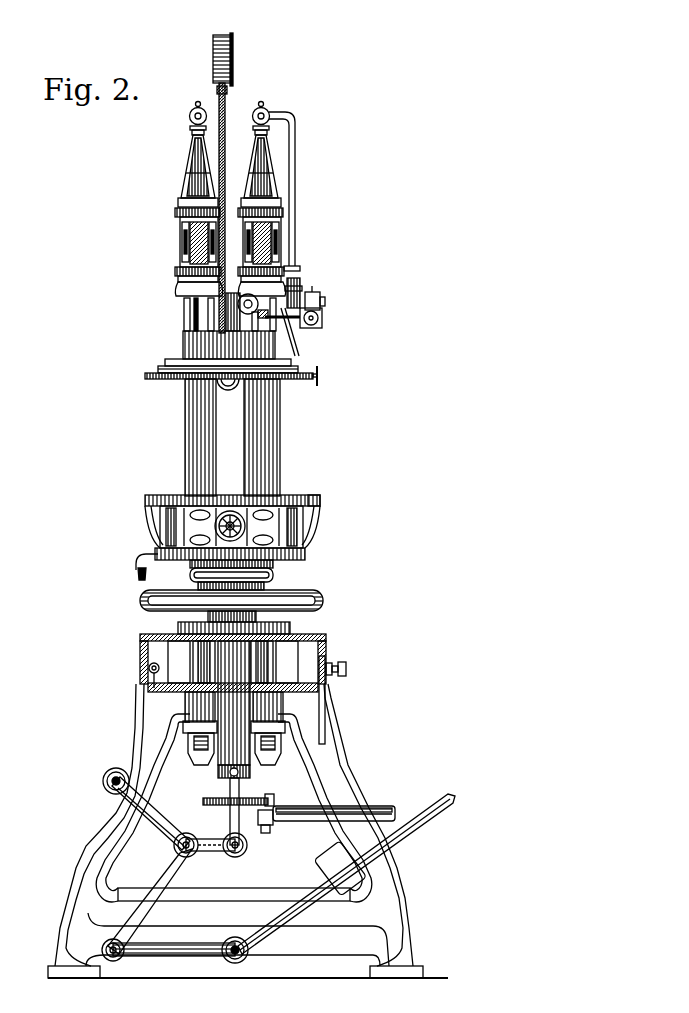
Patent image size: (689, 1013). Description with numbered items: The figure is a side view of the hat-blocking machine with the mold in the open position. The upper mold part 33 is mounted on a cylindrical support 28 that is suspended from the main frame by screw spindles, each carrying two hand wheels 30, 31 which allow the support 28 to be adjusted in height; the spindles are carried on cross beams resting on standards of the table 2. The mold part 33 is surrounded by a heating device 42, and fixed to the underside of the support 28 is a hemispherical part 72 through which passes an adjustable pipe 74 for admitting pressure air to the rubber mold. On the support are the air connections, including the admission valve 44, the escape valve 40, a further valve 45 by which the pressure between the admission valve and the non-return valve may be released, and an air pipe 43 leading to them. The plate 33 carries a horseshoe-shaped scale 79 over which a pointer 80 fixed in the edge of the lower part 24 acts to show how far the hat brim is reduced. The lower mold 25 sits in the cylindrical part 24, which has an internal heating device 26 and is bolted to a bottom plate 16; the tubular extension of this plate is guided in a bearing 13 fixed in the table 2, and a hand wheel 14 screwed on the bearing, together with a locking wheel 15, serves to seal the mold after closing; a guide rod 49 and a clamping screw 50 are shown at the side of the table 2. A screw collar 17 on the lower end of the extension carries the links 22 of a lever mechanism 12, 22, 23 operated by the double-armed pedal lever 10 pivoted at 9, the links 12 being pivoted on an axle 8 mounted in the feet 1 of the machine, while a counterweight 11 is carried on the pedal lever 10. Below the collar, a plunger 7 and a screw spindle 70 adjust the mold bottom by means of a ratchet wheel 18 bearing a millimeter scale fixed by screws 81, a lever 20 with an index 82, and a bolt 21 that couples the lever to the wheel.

The feet 1 is at (385, 890).
The table 2 is at (132, 638).
The plunger 7 is at (201, 757).
The axle 8 is at (95, 773).
The pivot 9 is at (240, 944).
The pedal lever 10 is at (448, 793).
The counterweight block 11 is at (318, 862).
The links 12 is at (163, 802).
The bearing 13 is at (293, 617).
The hand wheel 14 is at (324, 592).
The locking wheel 15 is at (265, 569).
The bottom plate 16 is at (311, 545).
The screw collar 17 is at (253, 764).
The ratchet wheel 18 is at (262, 786).
The lever 20 is at (394, 797).
The bolt 21 is at (262, 822).
The links 22 is at (206, 828).
The links 23 is at (160, 872).
The cylindrical part 24 is at (135, 500).
The lower mold 25 is at (298, 487).
The heating device 26 is at (150, 567).
The cylindrical support 28 is at (178, 332).
The hand wheel 30 is at (167, 265).
The hand wheel 31 is at (167, 205).
The upper mold part 33 is at (160, 355).
The escape valve 40 is at (320, 322).
The heating device 42 is at (290, 360).
The pipe 43 is at (294, 188).
The admission valve 44 is at (324, 292).
The valve 45 is at (291, 290).
The rod 49 is at (317, 720).
The screw 50 is at (322, 655).
The screw spindle 70 is at (240, 782).
The hemispherical part 72 is at (227, 385).
The adjustable pipe 74 is at (220, 382).
The horseshoe shaped scale 79 is at (311, 368).
The pointer 80 is at (312, 492).
The screws 81 is at (196, 793).
The index 82 is at (275, 814).